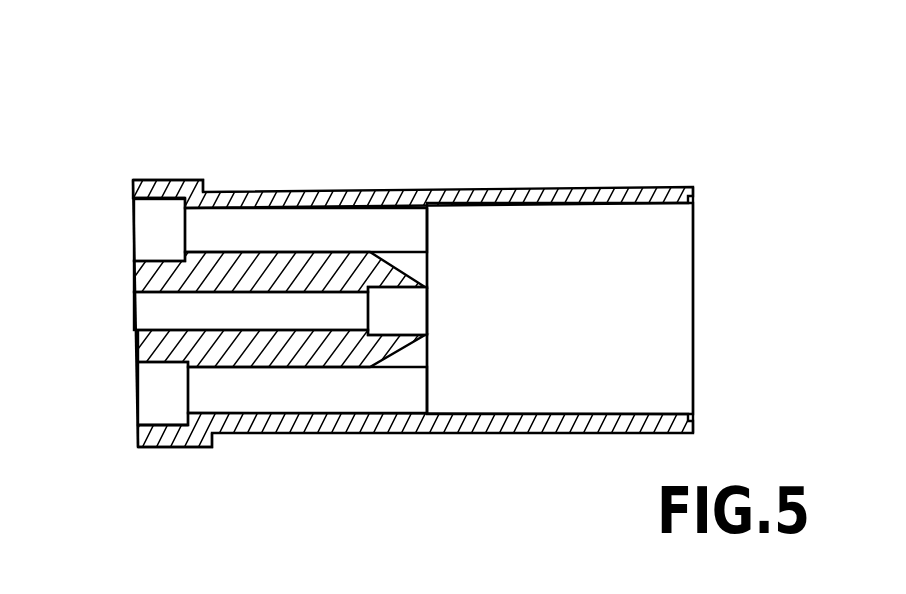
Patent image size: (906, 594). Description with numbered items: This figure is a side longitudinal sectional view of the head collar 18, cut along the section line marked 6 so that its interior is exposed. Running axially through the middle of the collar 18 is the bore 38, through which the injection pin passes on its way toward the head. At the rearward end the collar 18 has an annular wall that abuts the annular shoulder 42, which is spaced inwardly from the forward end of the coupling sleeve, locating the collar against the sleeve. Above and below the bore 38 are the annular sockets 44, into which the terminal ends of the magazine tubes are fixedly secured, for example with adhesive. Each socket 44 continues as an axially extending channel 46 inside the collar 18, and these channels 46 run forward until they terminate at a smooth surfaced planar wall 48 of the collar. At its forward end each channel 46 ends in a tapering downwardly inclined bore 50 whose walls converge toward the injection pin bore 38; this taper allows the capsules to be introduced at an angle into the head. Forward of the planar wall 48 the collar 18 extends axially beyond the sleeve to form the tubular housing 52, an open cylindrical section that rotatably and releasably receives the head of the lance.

The head collar 18 is at (446, 108).
The bore 38 is at (158, 308).
The annular shoulder 42 is at (203, 188).
The annular sockets 44 is at (157, 233).
The axially extending channel 46 is at (283, 232).
The planar wall 48 is at (427, 238).
The tapering downwardly inclined bore 50 is at (383, 268).
The tubular housing 52 is at (590, 248).
The section line 6- 6 is at (370, 505).